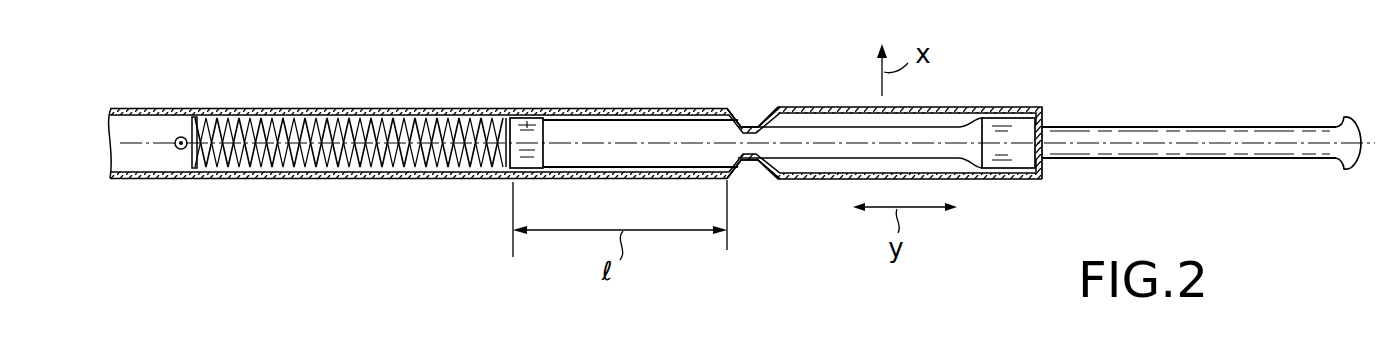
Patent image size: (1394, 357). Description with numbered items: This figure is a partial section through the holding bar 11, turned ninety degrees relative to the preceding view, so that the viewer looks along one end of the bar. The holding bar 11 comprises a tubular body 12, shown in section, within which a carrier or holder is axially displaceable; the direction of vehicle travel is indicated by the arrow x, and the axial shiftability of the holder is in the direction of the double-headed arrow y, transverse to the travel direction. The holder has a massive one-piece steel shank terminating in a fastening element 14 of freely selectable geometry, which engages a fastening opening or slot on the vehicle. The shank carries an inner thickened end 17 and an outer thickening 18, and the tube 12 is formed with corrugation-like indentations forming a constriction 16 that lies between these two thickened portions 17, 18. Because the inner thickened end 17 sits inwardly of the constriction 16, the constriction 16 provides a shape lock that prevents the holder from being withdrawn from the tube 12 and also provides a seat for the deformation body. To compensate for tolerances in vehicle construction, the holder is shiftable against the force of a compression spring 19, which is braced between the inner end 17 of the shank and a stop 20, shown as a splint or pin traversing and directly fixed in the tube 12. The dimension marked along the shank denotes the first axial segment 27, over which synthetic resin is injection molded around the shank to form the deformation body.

The holding bar 11 is at (341, 190).
The tubular body 12 is at (425, 180).
The fastening element 14 is at (1343, 112).
The constriction 16 is at (753, 110).
The inner thickened end 17 is at (523, 130).
The outer thickening 18 is at (1013, 130).
The compression spring 19 is at (342, 108).
The stop 20 is at (181, 137).
The first axial segment 27 is at (581, 138).